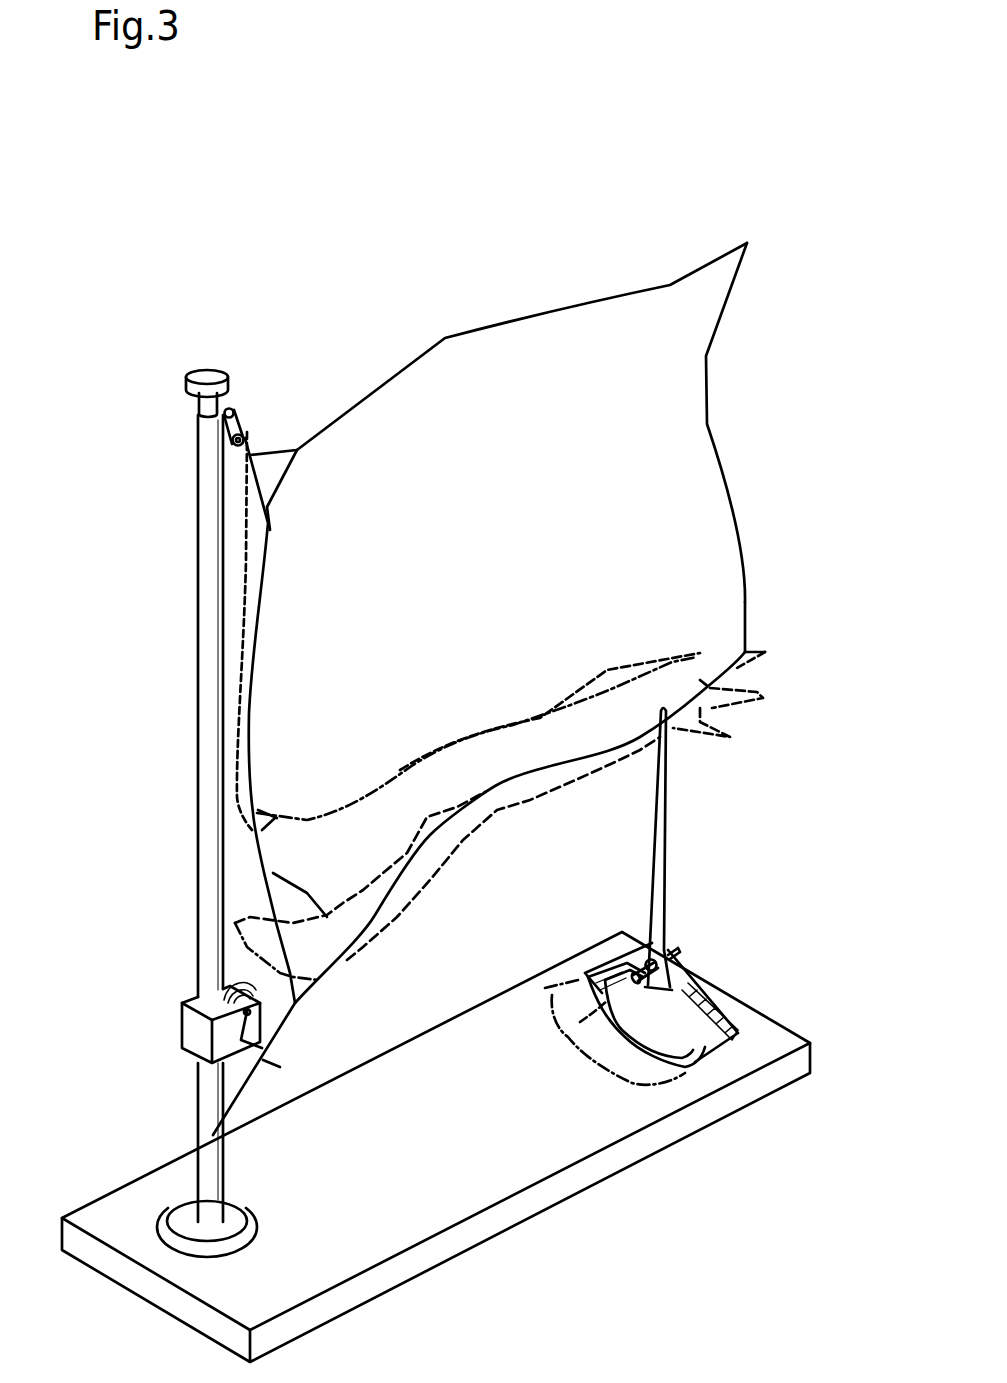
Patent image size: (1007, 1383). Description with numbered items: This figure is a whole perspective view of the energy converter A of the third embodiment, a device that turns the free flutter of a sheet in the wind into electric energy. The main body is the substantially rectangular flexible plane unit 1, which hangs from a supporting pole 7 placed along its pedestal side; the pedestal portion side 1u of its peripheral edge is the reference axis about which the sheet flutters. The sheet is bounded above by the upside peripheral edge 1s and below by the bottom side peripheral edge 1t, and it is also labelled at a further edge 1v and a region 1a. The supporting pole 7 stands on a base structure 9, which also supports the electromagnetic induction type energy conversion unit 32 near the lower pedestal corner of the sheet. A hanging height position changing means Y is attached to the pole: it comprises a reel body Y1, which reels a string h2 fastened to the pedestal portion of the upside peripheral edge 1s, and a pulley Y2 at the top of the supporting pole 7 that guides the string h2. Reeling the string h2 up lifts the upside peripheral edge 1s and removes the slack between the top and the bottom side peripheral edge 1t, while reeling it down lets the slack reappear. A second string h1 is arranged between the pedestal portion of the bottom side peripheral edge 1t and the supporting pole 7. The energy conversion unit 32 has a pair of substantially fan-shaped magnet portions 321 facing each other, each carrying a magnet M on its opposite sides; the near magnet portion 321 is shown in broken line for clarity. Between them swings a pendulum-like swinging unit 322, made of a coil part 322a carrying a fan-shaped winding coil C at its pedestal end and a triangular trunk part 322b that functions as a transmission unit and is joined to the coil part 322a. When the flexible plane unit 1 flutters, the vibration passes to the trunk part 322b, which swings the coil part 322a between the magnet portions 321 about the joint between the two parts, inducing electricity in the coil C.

The energy converter A is at (405, 213).
The flexible plane unit 1 is at (662, 366).
The upside peripheral edge 1s is at (488, 320).
The pedestal portion side of the peripheral edge 1u is at (270, 620).
The right side edge of bag body 1v is at (758, 532).
The lower corner of bag body 1a is at (696, 604).
The bottom side peripheral edge 1t is at (508, 762).
The supporting pole 7 is at (195, 590).
The base structure 9 is at (487, 1243).
The electromagnetic induction type energy conversion unit 32 is at (742, 950).
The magnet portion 321 is at (738, 1050).
The swinging unit 322 is at (627, 948).
The coil part 322a is at (605, 958).
The trunk part 322b is at (647, 838).
The coil C is at (585, 997).
The magnet M is at (585, 973).
The hanging height position changing means Y is at (157, 1060).
The reel body Y1 is at (173, 1023).
The pulley Y2 is at (247, 419).
The string h1 is at (263, 1060).
The string h2 is at (228, 868).